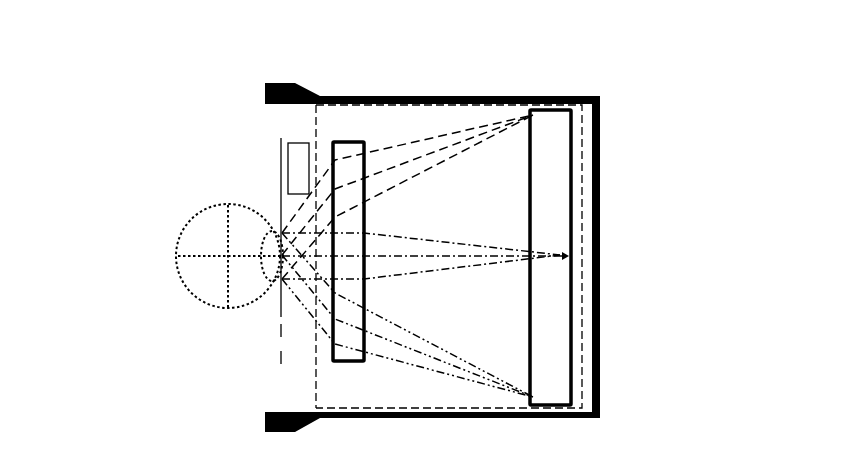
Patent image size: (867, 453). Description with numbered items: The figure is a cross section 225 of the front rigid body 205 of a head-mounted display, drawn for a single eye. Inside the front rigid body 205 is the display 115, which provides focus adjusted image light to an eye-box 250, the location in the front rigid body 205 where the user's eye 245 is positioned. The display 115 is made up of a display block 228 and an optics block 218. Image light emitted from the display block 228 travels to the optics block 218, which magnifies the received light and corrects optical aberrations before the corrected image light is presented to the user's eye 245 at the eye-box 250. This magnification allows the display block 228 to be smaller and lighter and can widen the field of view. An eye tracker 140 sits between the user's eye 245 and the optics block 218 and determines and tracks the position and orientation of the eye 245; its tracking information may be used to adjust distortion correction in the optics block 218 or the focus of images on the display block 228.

The cross section 225 is at (72, 20).
The front rigid body 205 is at (574, 93).
The display 115 is at (316, 337).
The eye-box 250 is at (279, 357).
The eye tracker 140 is at (288, 179).
The eye 245 is at (184, 230).
The optics block 218 is at (332, 155).
The display block 228 is at (567, 135).